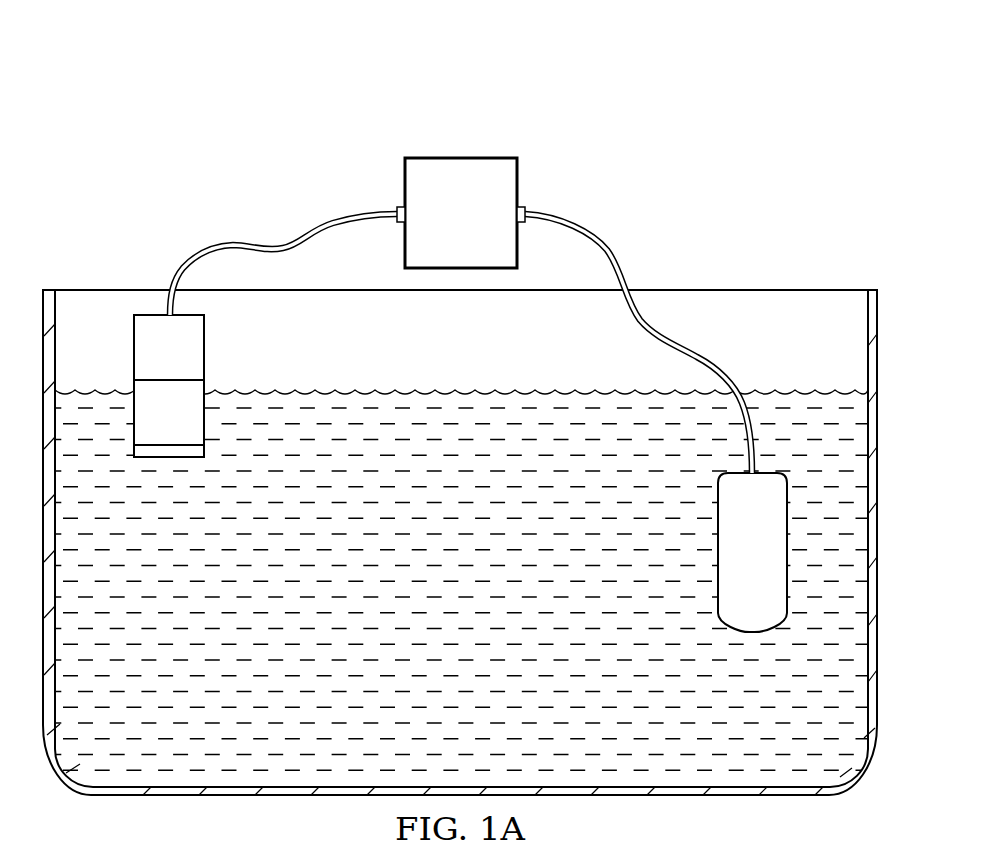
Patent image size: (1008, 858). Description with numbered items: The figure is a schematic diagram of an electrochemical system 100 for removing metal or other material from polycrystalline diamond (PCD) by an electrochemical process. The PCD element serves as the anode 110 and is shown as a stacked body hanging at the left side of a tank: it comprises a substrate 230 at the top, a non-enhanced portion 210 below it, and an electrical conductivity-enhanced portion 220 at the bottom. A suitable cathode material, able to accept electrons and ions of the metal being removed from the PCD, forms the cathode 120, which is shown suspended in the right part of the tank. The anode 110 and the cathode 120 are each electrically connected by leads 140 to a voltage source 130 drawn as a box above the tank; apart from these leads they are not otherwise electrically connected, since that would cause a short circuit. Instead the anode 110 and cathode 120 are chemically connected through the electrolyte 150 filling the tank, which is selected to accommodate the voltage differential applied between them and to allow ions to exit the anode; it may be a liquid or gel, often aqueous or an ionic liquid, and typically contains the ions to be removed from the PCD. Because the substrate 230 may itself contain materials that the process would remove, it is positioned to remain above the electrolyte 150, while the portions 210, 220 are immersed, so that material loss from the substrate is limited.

The electrochemical system 100 is at (460, 403).
The anode 110 is at (213, 351).
The cathode 120 is at (772, 568).
The voltage source 130 is at (460, 158).
The leads 140 is at (236, 243).
The electrolyte 150 is at (480, 602).
The non-enhanced portion 210 is at (190, 429).
The electrical conductivity-enhanced portion 220 is at (172, 453).
The substrate 230 is at (190, 364).